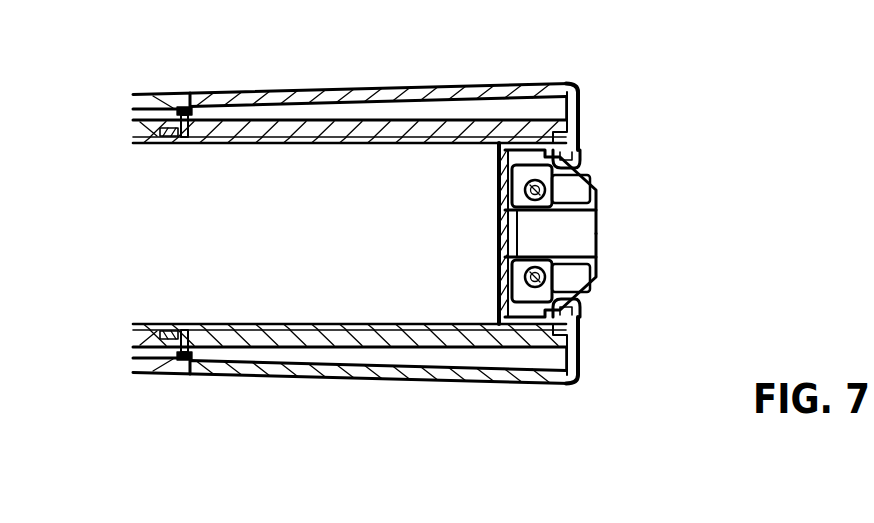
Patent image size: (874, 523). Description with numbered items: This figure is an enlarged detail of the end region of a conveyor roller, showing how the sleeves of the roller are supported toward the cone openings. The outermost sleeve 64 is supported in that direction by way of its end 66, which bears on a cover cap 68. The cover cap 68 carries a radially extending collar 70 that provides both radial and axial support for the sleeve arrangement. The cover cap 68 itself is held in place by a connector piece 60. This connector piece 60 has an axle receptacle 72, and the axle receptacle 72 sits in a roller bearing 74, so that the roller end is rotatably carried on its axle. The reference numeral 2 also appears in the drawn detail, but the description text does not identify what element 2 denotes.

The sandwich panel 2 is at (288, 142).
The connector piece 60 is at (445, 227).
The sleeve 64 is at (311, 97).
The end 66 is at (544, 71).
The cover cap 68 is at (580, 112).
The radially extending collar 70 is at (580, 367).
The axle receptacle 72 is at (582, 235).
The roller bearing 74 is at (541, 300).